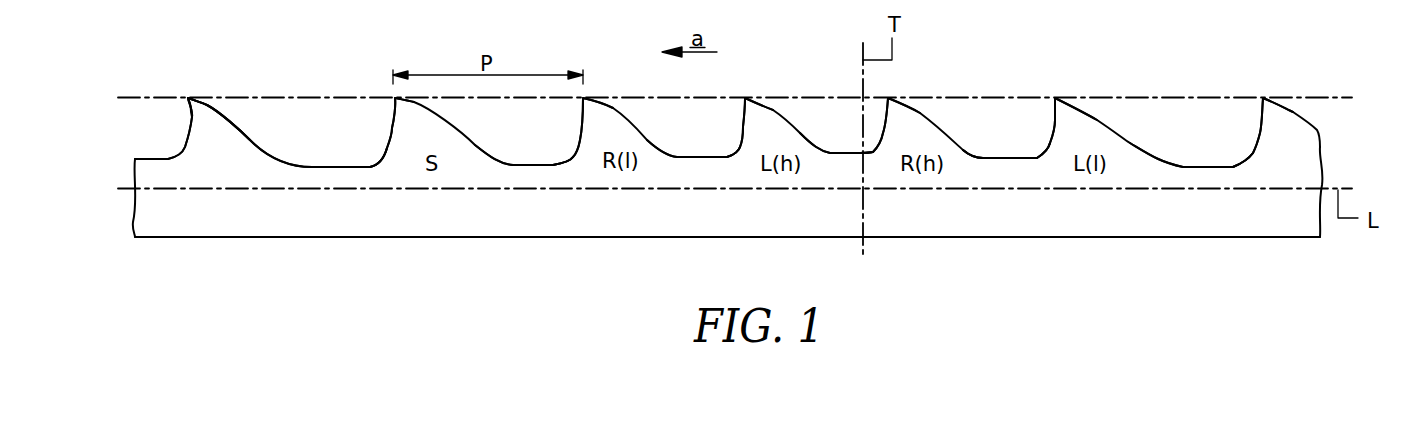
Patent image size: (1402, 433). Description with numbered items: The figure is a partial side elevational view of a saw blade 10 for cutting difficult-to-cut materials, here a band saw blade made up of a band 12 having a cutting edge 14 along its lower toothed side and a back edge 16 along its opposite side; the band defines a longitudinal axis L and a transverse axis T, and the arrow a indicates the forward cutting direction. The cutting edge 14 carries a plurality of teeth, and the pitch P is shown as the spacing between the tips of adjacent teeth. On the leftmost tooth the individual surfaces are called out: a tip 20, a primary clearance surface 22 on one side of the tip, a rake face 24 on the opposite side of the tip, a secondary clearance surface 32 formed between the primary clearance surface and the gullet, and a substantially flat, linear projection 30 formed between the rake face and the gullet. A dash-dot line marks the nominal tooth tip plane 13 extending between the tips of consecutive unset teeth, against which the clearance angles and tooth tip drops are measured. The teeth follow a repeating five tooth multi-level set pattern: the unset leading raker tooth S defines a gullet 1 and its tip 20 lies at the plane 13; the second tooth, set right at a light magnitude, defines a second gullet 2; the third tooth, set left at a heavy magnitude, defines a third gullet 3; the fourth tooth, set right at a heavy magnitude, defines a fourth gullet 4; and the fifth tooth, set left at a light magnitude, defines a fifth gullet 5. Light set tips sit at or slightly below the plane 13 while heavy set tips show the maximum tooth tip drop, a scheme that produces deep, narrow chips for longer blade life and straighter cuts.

The saw blade 10 is at (938, 73).
The band 12 is at (706, 228).
The plane 13 is at (1192, 97).
The cutting edge 14 is at (775, 77).
The back edge 16 is at (257, 240).
The tip 20 is at (188, 97).
The primary clearance surface 22 is at (205, 103).
The rake face 24 is at (190, 110).
The projection 30 is at (187, 125).
The secondary clearance surface 32 is at (244, 117).
The gullet 1 is at (327, 137).
The second gullet 2 is at (516, 137).
The third gullet 3 is at (690, 137).
The fourth gullet 4 is at (844, 137).
The fifth gullet 5 is at (996, 137).